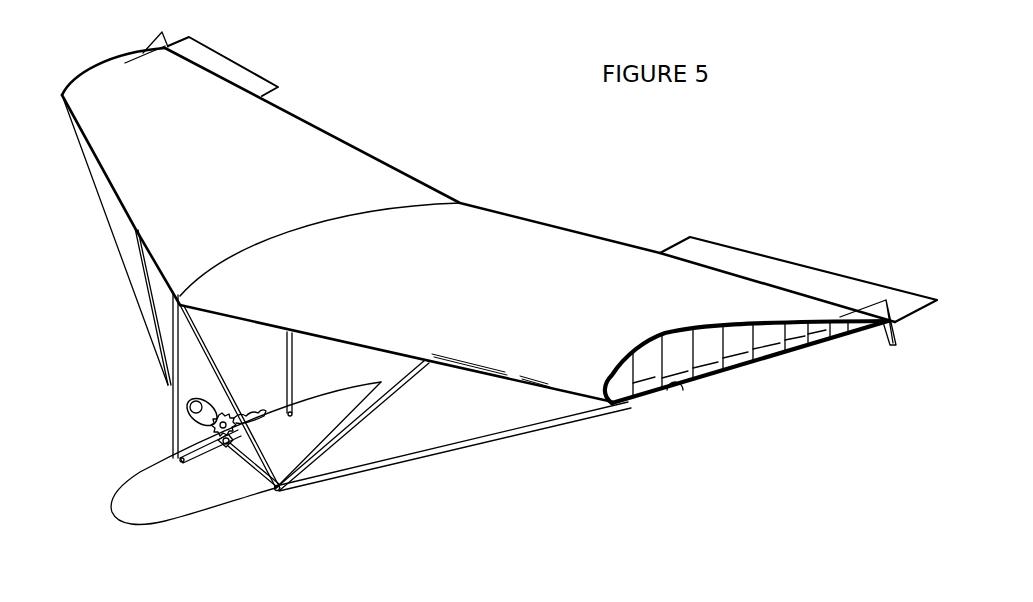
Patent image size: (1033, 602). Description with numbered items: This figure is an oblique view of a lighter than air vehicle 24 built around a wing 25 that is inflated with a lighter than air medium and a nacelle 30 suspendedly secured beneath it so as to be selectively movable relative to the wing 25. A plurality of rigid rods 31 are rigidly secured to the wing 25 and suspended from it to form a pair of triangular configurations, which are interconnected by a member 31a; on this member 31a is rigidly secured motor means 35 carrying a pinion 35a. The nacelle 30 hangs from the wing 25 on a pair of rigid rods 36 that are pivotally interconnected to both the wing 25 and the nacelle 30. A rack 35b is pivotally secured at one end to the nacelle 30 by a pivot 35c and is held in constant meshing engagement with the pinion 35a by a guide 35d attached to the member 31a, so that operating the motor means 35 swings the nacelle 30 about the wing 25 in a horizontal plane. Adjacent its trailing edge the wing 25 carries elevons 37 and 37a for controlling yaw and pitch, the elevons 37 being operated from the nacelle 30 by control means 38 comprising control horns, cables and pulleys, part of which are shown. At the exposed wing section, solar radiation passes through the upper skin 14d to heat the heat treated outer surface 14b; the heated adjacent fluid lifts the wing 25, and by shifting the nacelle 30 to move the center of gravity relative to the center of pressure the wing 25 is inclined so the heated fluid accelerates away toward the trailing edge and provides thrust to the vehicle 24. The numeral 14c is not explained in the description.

The lighter than air vehicle 24 is at (512, 154).
The wing 25 is at (565, 272).
The nacelle 30 is at (143, 477).
The rigid rods 31 is at (283, 472).
The member 31a is at (253, 470).
The motor means 35 is at (188, 418).
The pinion 35a is at (207, 437).
The rack 35b is at (210, 447).
The pivot 35c is at (183, 463).
The guide 35d is at (225, 443).
The rigid rods 36 is at (290, 350).
The elevons 37 is at (772, 352).
The elevon 37a is at (248, 78).
The control means 38 is at (888, 333).
The heat treated outer surface 14b is at (748, 380).
The keel attachment 14c is at (670, 390).
The upper skin 14d is at (785, 352).